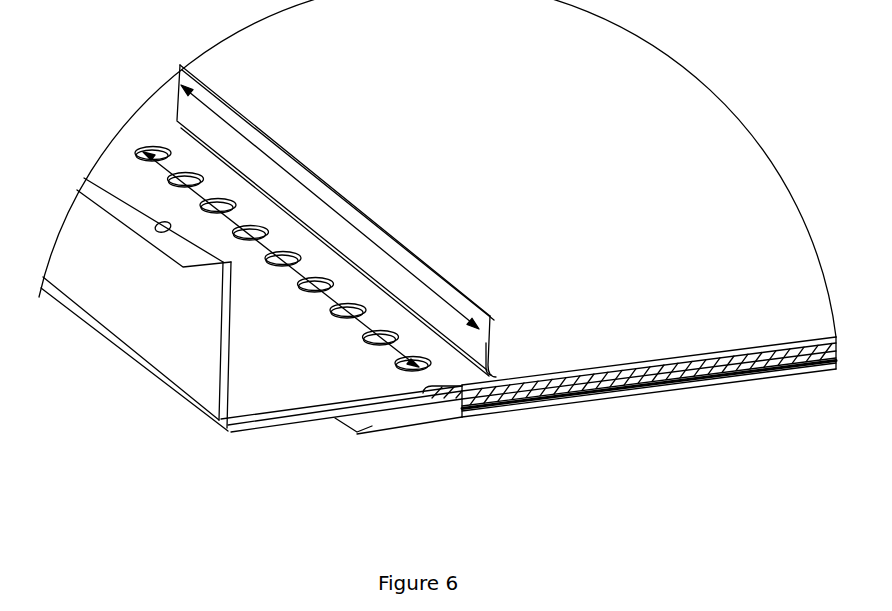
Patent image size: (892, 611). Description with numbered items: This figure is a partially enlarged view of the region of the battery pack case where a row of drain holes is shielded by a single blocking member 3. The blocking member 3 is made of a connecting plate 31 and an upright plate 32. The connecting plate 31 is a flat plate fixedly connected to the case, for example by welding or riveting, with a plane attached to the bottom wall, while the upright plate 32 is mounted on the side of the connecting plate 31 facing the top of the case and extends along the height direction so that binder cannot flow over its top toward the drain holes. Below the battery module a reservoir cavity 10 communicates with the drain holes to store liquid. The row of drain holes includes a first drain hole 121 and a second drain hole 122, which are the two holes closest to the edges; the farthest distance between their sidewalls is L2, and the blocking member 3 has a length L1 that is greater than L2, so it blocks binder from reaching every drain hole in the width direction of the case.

The reservoir cavity 10 is at (470, 393).
The first drain hole 121 is at (143, 157).
The second drain hole 122 is at (403, 368).
The blocking member 3 is at (506, 299).
The connecting plate 31 is at (495, 318).
The upright plate 32 is at (502, 362).
The length of the blocking member L1 is at (330, 207).
The farthest distance between the sidewalls of the first and second drain holes L2 is at (281, 259).